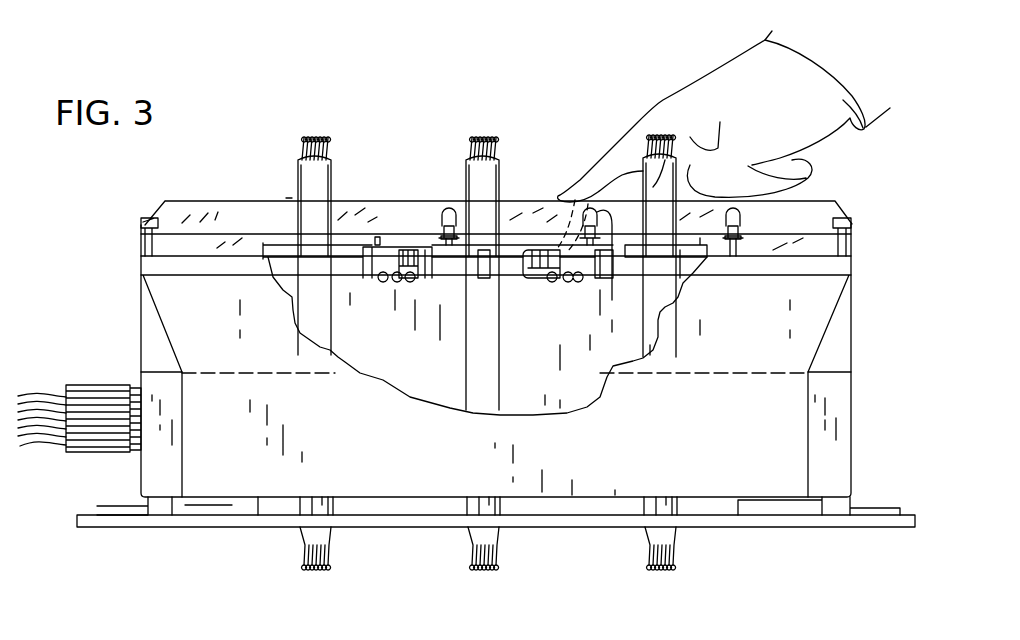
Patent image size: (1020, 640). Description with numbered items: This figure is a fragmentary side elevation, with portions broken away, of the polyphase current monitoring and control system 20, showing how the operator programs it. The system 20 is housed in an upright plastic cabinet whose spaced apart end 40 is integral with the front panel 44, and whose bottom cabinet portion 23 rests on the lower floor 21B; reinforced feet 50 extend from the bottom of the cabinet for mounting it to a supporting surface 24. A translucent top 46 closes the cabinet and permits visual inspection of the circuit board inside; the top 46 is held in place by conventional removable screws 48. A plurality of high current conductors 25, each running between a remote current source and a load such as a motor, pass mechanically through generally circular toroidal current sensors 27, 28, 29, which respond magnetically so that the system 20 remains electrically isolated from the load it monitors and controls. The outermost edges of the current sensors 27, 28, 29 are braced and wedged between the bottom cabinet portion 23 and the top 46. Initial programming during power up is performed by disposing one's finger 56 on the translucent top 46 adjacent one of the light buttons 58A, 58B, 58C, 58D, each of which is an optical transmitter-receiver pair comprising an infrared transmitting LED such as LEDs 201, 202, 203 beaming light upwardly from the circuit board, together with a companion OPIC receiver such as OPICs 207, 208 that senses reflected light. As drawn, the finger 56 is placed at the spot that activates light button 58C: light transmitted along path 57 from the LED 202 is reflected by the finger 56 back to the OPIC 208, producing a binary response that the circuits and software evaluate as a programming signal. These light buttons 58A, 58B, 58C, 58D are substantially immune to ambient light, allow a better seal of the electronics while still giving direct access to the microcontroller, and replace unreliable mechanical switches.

The polyphase current monitoring and control system 20 is at (369, 128).
The lower floor 21B is at (435, 500).
The bottom cabinet portion 23 is at (830, 417).
The supporting surface 24 is at (168, 528).
The high current conductors 25 is at (643, 168).
The toroidal current sensor 27 is at (327, 262).
The toroidal current sensor 28 is at (513, 280).
The toroidal current sensor 29 is at (676, 266).
The cabinet end 40 is at (147, 333).
The front panel 44 is at (690, 418).
The translucent top 46 is at (237, 207).
The removable screws 48 is at (147, 220).
The reinforced feet 50 is at (136, 506).
The finger 56 is at (622, 135).
The light path 57 is at (558, 228).
The light button 58A is at (288, 196).
The light button 58B is at (446, 203).
The light button 58C is at (586, 200).
The light button 58D is at (753, 216).
The infrared transmitting LED 201 is at (443, 218).
The infrared transmitting LED 202 is at (611, 270).
The infrared transmitting LED 203 is at (740, 228).
The OPIC 207 is at (410, 250).
The OPIC 208 is at (523, 258).